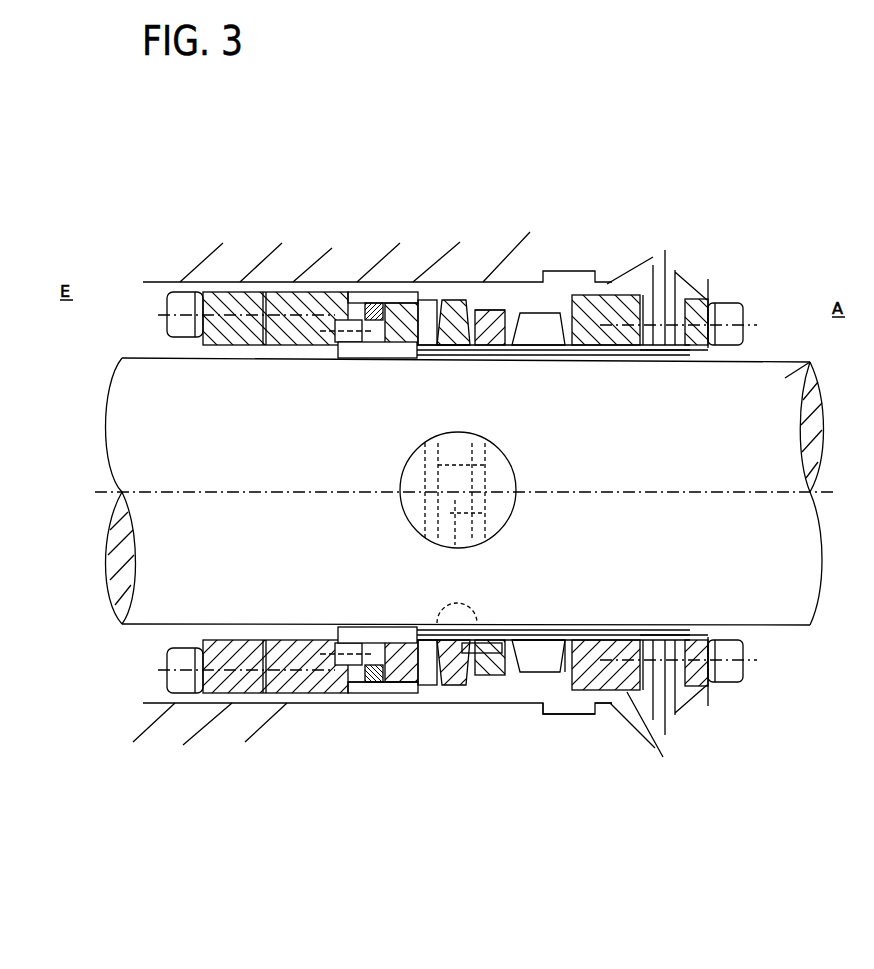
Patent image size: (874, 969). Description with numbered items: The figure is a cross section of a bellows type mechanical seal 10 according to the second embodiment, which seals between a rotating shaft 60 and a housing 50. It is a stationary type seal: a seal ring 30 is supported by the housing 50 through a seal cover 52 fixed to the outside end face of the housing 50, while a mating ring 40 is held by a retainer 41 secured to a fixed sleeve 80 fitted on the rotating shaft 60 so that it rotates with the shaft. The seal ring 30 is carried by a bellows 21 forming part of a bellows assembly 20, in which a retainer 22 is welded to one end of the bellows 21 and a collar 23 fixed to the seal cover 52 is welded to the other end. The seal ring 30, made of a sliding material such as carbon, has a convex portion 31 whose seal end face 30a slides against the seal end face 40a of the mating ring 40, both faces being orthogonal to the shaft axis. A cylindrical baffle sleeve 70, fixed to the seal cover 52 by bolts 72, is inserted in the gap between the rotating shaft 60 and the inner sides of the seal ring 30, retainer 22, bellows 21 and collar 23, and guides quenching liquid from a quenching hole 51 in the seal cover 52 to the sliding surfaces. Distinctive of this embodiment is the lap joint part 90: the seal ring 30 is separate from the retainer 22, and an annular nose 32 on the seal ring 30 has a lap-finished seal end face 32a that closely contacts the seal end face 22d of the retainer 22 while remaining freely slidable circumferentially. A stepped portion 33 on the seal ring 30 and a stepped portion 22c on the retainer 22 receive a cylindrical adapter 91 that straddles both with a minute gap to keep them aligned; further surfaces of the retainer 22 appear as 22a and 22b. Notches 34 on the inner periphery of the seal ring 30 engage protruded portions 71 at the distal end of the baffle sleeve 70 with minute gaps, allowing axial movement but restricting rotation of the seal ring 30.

The bellows type mechanical seal 10 is at (740, 280).
The bellows assembly 20 is at (557, 303).
The bellows 21 is at (533, 313).
The retainer 22 is at (500, 310).
The seal ring portion 22a is at (477, 520).
The seal ring portion 22b is at (556, 712).
The stepped portion 22c is at (552, 712).
The seal end face 22d is at (483, 308).
The collar 23 is at (653, 297).
The seal ring 30 is at (455, 300).
The seal end face 30a is at (423, 682).
The convex portion 31 is at (400, 303).
The nose 32 is at (470, 300).
The seal end face 32a is at (478, 300).
The stepped portion 33 is at (447, 680).
The notch 34 is at (341, 653).
The mating ring 40 is at (400, 300).
The seal end face 40a is at (413, 660).
The retainer 41 is at (342, 298).
The housing 50 is at (431, 322).
The quenching hole 51 is at (677, 270).
The seal cover 52 is at (708, 279).
The rotating shaft 60 is at (810, 362).
The baffle sleeve 70 is at (663, 274).
The protruded portion 71 is at (630, 703).
The bolt 72 is at (745, 318).
The fixed sleeve 80 is at (293, 358).
The lap joint part 90 is at (478, 637).
The cylindrical adapter 91 is at (478, 663).